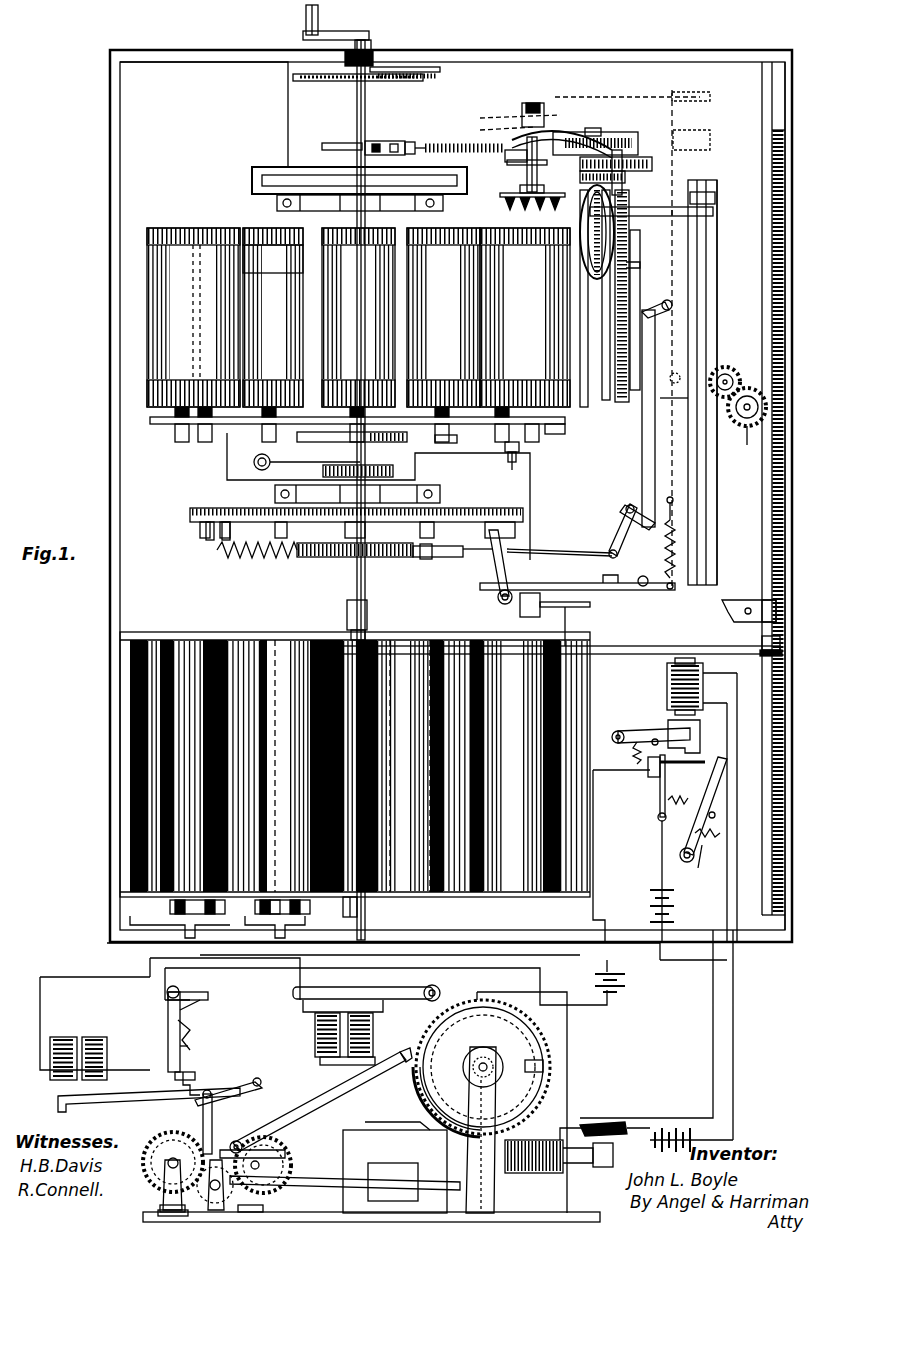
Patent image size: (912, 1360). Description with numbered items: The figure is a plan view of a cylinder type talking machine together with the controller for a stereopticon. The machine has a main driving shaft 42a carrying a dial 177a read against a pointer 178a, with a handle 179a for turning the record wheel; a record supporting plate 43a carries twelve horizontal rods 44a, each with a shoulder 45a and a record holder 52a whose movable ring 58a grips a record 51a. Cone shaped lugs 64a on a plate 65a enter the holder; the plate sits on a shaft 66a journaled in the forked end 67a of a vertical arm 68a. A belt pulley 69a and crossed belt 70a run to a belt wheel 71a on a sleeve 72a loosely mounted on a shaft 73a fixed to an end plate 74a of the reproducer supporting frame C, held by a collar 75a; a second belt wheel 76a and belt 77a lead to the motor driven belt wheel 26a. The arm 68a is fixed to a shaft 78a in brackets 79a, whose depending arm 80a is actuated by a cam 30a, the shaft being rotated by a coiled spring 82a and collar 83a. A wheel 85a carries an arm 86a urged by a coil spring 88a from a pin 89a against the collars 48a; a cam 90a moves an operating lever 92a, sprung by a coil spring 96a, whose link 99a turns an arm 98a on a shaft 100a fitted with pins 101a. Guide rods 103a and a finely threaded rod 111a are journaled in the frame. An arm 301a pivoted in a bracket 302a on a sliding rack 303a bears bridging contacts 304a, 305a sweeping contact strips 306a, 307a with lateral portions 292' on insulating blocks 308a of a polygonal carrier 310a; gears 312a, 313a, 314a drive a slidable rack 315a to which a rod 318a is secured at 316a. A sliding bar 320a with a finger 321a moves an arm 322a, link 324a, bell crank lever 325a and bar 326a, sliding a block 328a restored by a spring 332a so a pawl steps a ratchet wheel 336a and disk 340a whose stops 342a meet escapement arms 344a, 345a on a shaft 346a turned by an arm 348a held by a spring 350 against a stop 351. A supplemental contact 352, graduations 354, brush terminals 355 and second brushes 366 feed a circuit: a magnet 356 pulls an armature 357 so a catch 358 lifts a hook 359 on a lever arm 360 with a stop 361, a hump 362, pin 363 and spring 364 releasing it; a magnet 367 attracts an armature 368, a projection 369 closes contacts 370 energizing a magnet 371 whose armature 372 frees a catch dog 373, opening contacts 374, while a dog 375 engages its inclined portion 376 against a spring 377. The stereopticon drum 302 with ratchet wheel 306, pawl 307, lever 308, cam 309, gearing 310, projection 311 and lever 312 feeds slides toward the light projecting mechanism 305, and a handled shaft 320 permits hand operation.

The main or driving shaft 42a is at (357, 104).
The handle 179a is at (305, 36).
The pointer 178a is at (395, 68).
The dial 177a is at (300, 80).
The cam 30a is at (330, 144).
The depending arm 80a is at (395, 158).
The horizontally adjustable collar 83a is at (437, 140).
The coiled spring 82a is at (457, 138).
The belt pulley 69a is at (505, 130).
The horizontally disposed shaft 78a is at (505, 118).
The forked end 67a is at (522, 104).
The crossed belt 70a is at (560, 110).
The shaft 73a is at (595, 128).
The collar 75a is at (610, 130).
The belt wheel 26a is at (578, 130).
The sleeve 72a is at (620, 133).
The second belt wheel 76a is at (650, 135).
The belt 77a is at (640, 138).
The belt wheel 71a is at (630, 152).
The rod 318a is at (673, 150).
The securing point 316a is at (708, 196).
The upper end plate 74a is at (640, 210).
The vertically disposed arm 68a is at (528, 168).
The shaft 66a is at (534, 183).
The bearings or brackets 79a is at (512, 150).
The cone shaped lug 64a is at (510, 196).
The plate 65a is at (505, 205).
The pins 101a is at (583, 200).
The supporting guide rod 103a is at (590, 250).
The finger 321a is at (640, 268).
The reproducer supporting frame C is at (636, 280).
The arm 322a is at (668, 312).
The finely threaded rod 111a is at (648, 385).
The sliding bar 320a is at (645, 445).
The link 324a is at (690, 405).
The gear 314a is at (725, 400).
The gear 312a is at (745, 378).
The gear 313a is at (747, 428).
The slidable rack 315a is at (717, 260).
The sliding rack 303a is at (775, 538).
The horizontally disposed shafts or rods 44a is at (190, 228).
The record 51a is at (224, 228).
The record holder 52a is at (265, 230).
The movable ring 58a is at (302, 385).
The coil spring 88a is at (395, 432).
The shoulder 45a is at (172, 424).
The record supporting plate 43a is at (228, 458).
The arm 86a is at (315, 440).
The coil spring 96a is at (262, 470).
The wheel 85a is at (398, 472).
The operating lever 92a is at (305, 485).
The cam 90a is at (374, 478).
The pin 89a is at (425, 440).
The arm 98a is at (505, 448).
The loosely mounted collar 48a is at (510, 440).
The link 99a is at (512, 468).
The rod or shaft 100a is at (528, 508).
The disk 340a is at (215, 520).
The stops 342a is at (210, 536).
The spring 332a is at (225, 555).
The ratchet wheel 336a is at (300, 560).
The block 328a is at (410, 560).
The arm 345a is at (490, 565).
The shaft 346a is at (498, 596).
The arm 344a is at (530, 560).
The bell crank lever 325a is at (636, 512).
The link rod or bar 326a is at (605, 552).
The stop 351 is at (643, 576).
The spring 350 is at (672, 582).
The arm 348a is at (603, 598).
The pivoted dog 375 is at (735, 600).
The bracket 302a is at (760, 650).
The arm 301a is at (633, 648).
The lateral contact portions 292' is at (534, 619).
The bridging contact member 304a is at (365, 618).
The bridging contact member 305a is at (377, 632).
The contact block or strip 306a is at (150, 632).
The contact block or strip 307a is at (148, 640).
The polygonal carrier 310a is at (230, 640).
The supplemental lateral contact piece 352 is at (460, 780).
The graduations 354 is at (505, 904).
The brush terminals 355 is at (298, 906).
The second set of brush contacts 366 is at (200, 916).
The blocks of insulation 308a is at (450, 896).
The magnet 371 is at (665, 690).
The armature 372 is at (668, 722).
The pivoted catch dog 373 is at (660, 760).
The contacts 374 is at (660, 778).
The rearward inclined portion 376 is at (718, 768).
The spring 377 is at (702, 866).
The magnet 367 is at (92, 1036).
The spring 364 is at (200, 978).
The pin 363 is at (182, 1040).
The hump 362 is at (183, 1046).
The catch 358 is at (183, 1058).
The hook 359 is at (198, 1078).
The armature 357 is at (340, 998).
The magnet 356 is at (312, 1038).
The pivoted pawl 307 is at (368, 1066).
The large ratchet wheel 306 is at (440, 1020).
The rotatable drum 302 is at (430, 1040).
The shaft 320 is at (488, 1060).
The projection 369 is at (555, 1100).
The contacts 370 is at (560, 1125).
The light projecting mechanism 305 is at (478, 1167).
The armature 368 is at (95, 1102).
The depending stop member 361 is at (212, 1104).
The lever 308 is at (340, 1085).
The cam 309 is at (155, 1142).
The lever arm 360 is at (160, 1132).
The gearing 310 is at (275, 1146).
The lever 312 is at (312, 1176).
The projection 311 is at (160, 1178).